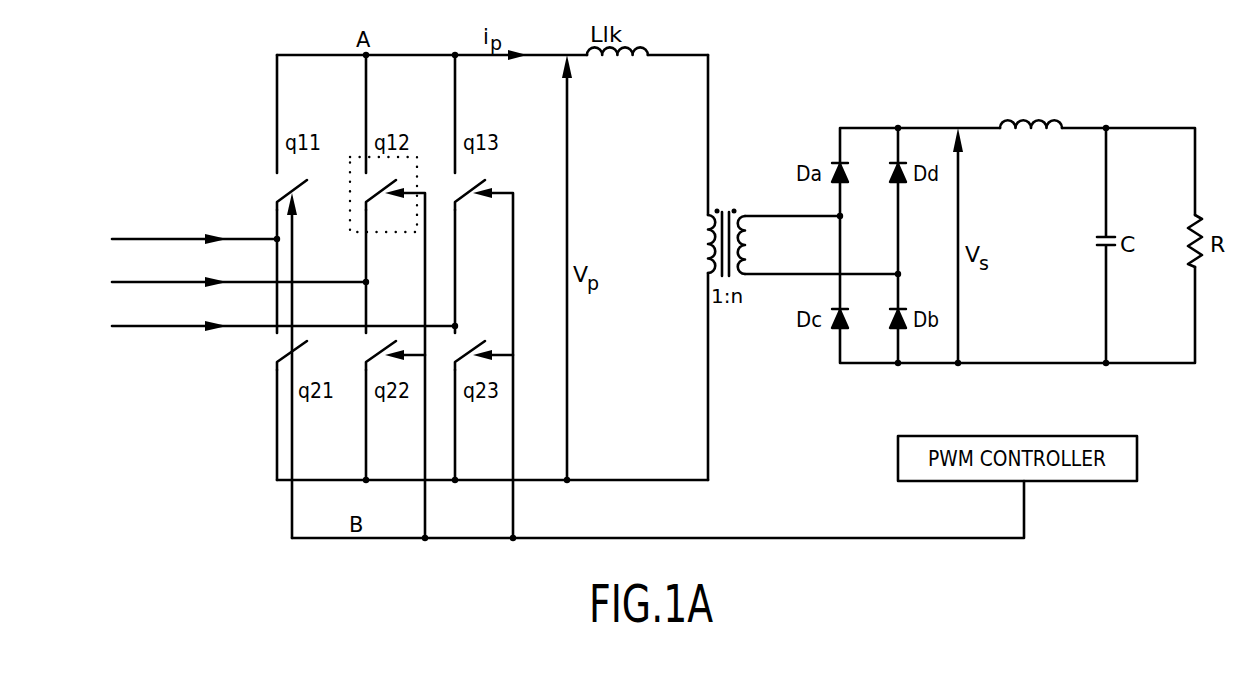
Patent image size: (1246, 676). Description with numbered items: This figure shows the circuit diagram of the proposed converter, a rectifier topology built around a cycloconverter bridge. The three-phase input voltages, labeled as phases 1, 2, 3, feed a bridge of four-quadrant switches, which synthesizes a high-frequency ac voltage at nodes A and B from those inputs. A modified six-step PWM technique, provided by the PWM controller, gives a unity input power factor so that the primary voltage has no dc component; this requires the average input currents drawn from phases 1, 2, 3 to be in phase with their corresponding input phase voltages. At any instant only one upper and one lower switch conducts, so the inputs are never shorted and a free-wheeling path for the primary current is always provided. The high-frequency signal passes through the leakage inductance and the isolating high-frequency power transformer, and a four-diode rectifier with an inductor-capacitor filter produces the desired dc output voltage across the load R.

The three-phase input voltage phase 1 is at (189, 234).
The three-phase input voltage phase 2 is at (233, 278).
The three-phase input voltage phase 3 is at (278, 322).